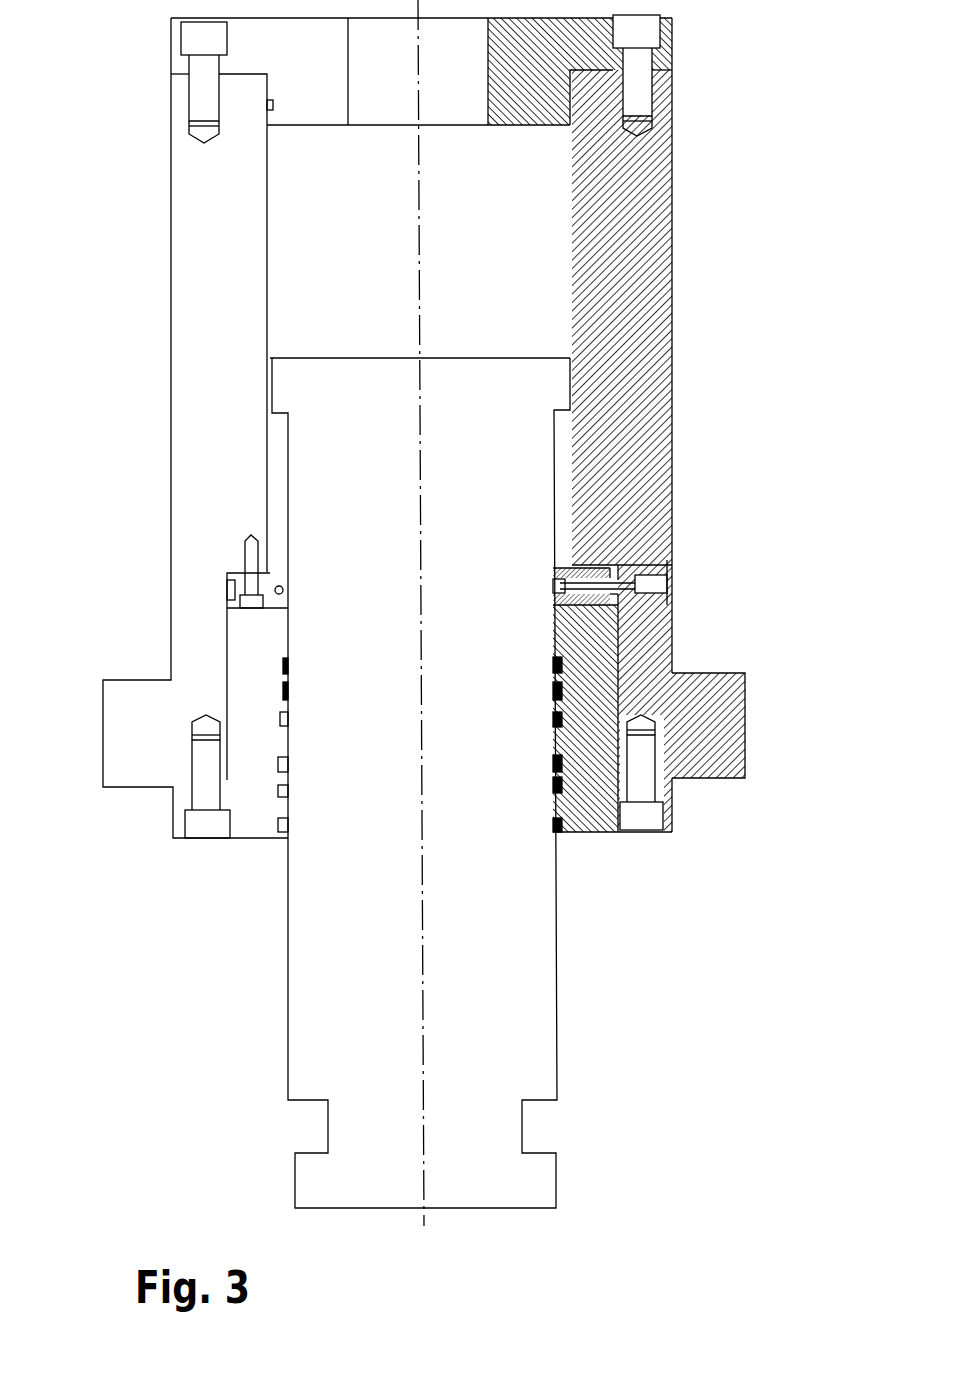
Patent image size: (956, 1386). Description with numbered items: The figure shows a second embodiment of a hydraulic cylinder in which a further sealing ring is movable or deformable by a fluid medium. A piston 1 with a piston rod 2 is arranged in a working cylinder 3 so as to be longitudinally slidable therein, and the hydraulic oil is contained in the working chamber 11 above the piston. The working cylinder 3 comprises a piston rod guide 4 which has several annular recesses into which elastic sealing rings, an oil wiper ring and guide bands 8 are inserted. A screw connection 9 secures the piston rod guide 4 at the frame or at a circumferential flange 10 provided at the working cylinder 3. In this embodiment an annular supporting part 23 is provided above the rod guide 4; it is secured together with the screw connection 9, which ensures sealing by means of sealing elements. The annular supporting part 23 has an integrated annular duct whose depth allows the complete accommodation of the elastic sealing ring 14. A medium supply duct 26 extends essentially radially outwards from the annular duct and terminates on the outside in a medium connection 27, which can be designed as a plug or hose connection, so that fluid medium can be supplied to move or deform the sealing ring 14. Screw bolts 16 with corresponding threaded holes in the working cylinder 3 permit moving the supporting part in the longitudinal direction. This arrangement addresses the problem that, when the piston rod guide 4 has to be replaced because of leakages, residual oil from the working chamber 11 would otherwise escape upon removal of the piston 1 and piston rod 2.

The piston 1 is at (543, 383).
The piston rod 2 is at (340, 480).
The working cylinder 3 is at (215, 198).
The piston rod guide 4 is at (252, 647).
The guide bands 8 is at (285, 702).
The screw connection 9 is at (640, 785).
The circumferential flange 10 is at (720, 733).
The working chamber 11 is at (512, 238).
The elastic sealing ring 14 is at (283, 588).
The screw bolts 16 is at (250, 560).
The annular supporting part 23 is at (598, 568).
The medium supply duct 26 is at (600, 592).
The medium connection 27 is at (655, 584).